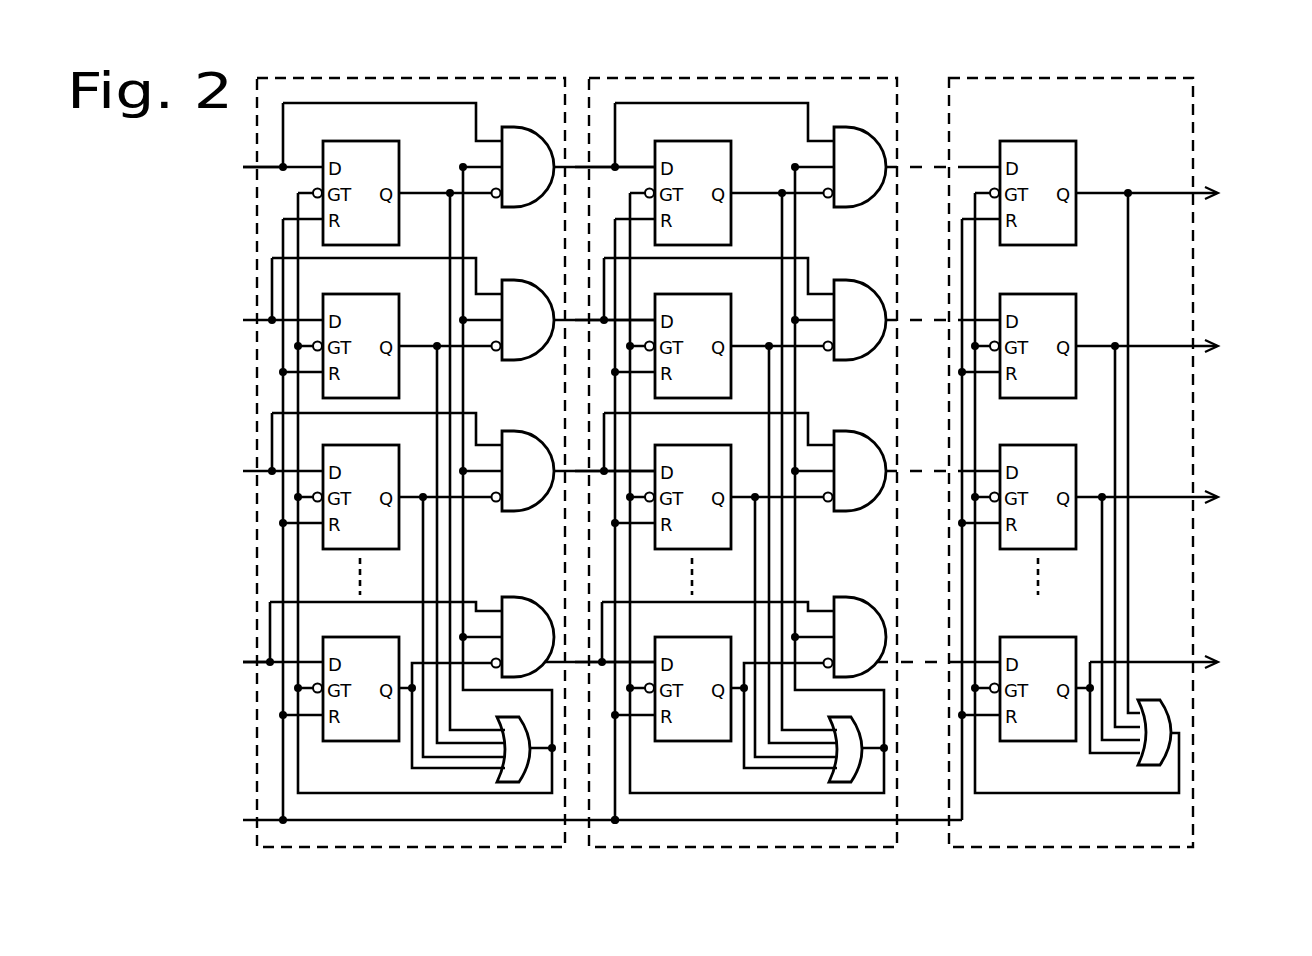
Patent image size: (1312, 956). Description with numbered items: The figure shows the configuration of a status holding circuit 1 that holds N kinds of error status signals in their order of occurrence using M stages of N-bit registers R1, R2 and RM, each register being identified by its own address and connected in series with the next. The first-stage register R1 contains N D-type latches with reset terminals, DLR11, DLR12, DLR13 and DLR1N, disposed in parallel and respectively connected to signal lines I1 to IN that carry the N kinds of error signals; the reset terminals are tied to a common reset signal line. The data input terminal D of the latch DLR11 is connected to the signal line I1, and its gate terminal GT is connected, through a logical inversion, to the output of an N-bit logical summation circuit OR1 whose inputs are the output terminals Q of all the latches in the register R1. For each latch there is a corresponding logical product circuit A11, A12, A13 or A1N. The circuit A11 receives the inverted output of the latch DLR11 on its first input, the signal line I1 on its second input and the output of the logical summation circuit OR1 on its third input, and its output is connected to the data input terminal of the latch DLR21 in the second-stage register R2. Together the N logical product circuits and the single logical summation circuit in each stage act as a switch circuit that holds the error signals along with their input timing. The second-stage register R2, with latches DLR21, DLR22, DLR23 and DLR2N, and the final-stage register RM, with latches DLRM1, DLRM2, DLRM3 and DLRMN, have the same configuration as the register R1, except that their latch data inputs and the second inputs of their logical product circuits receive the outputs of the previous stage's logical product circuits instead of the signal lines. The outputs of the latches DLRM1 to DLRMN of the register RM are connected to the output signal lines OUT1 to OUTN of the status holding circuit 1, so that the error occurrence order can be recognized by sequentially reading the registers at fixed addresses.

The status holding circuit 1 is at (1215, 113).
The signal line I1 is at (252, 172).
The signal line IN is at (252, 664).
The register R1 is at (448, 495).
The register R2 is at (787, 495).
The register RM is at (1095, 495).
The logical summation circuit OR1 is at (508, 783).
The logical product circuit A11 is at (534, 128).
The logical product circuit A12 is at (534, 281).
The logical product circuit A13 is at (534, 432).
The logical product circuit A1N is at (533, 597).
The output signal line OUT1 is at (1170, 192).
The output signal line OUTN is at (1173, 660).
The latch DLR11 is at (361, 181).
The latch DLR12 is at (361, 334).
The latch DLR13 is at (361, 485).
The latch DLR1N is at (361, 677).
The latch DLR21 is at (693, 181).
The latch DLR22 is at (693, 334).
The latch DLR23 is at (693, 485).
The latch DLR2N is at (693, 677).
The latch DLRM1 is at (1038, 181).
The latch DLRM2 is at (1038, 334).
The latch DLRM3 is at (1038, 485).
The latch DLRMN is at (1038, 677).